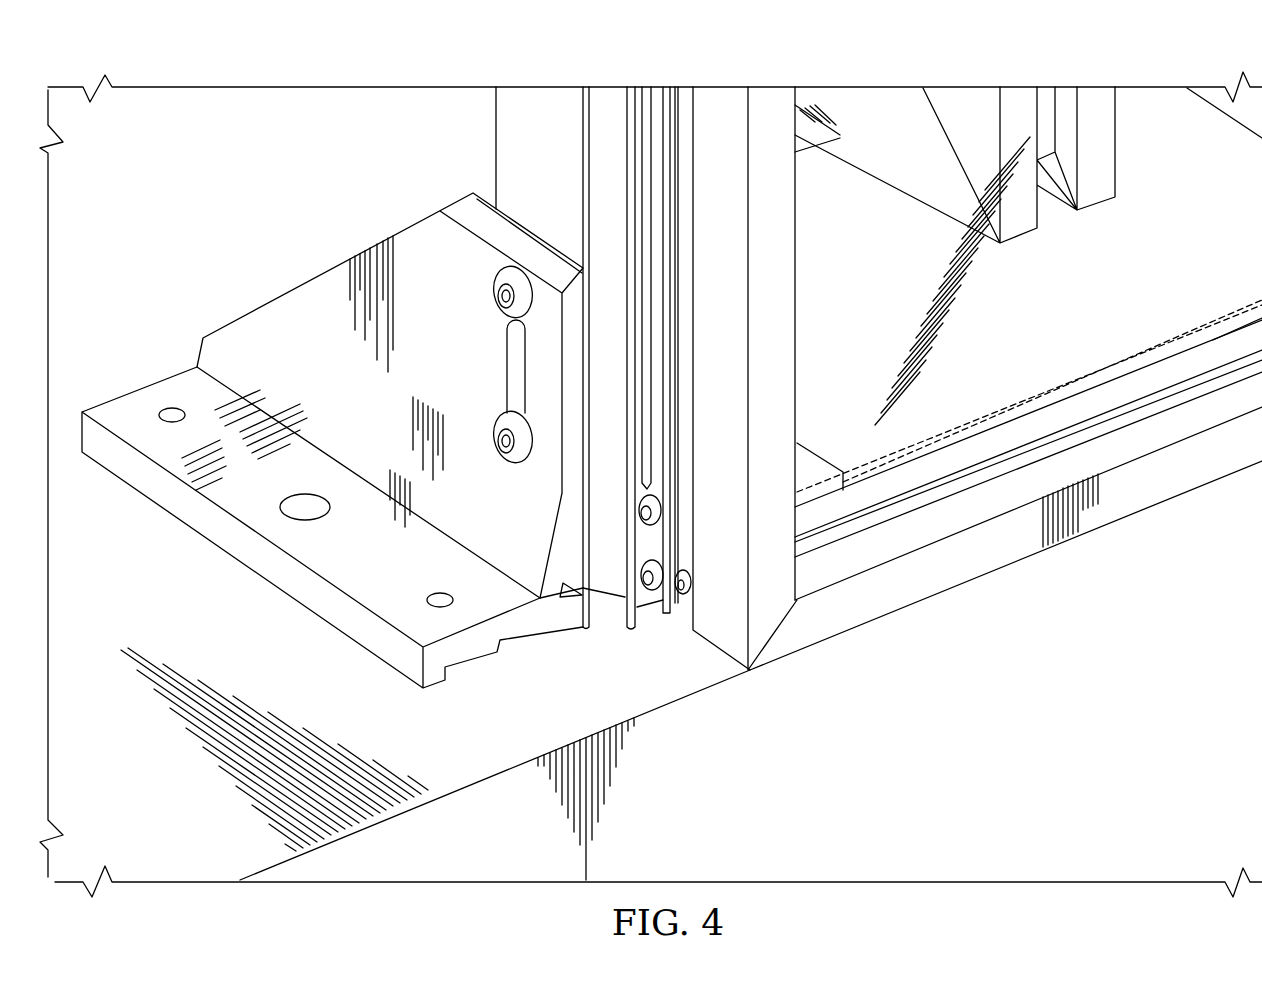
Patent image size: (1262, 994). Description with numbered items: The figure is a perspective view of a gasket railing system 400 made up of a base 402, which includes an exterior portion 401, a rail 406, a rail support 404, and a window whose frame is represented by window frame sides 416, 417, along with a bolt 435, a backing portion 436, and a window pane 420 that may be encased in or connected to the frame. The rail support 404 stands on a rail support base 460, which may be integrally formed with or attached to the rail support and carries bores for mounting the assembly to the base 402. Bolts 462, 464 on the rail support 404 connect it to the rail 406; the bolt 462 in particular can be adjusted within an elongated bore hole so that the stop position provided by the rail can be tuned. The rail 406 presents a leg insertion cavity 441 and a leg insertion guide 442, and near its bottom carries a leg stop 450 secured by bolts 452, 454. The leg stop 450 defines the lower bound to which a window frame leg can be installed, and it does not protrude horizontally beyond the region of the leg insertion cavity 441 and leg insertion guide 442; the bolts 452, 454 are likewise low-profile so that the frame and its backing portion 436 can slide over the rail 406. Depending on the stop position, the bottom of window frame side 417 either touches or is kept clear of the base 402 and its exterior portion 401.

The gasket railing system 400 is at (338, 74).
The exterior portion 401 is at (941, 756).
The base 402 is at (211, 648).
The rail support 404 is at (350, 270).
The rail 406 is at (507, 152).
The window frame side 416 is at (790, 197).
The window frame side 417 is at (1000, 565).
The window pane 420 is at (1081, 309).
The bolt 435 is at (690, 587).
The backing portion 436 is at (681, 617).
The leg insertion cavity 441 is at (662, 373).
The leg insertion guide 442 is at (660, 270).
The leg stop 450 is at (640, 548).
The bolt 452 is at (655, 590).
The bolt 454 is at (645, 515).
The rail support base 460 is at (122, 405).
The bolt 462 is at (510, 455).
The bolt 464 is at (497, 289).